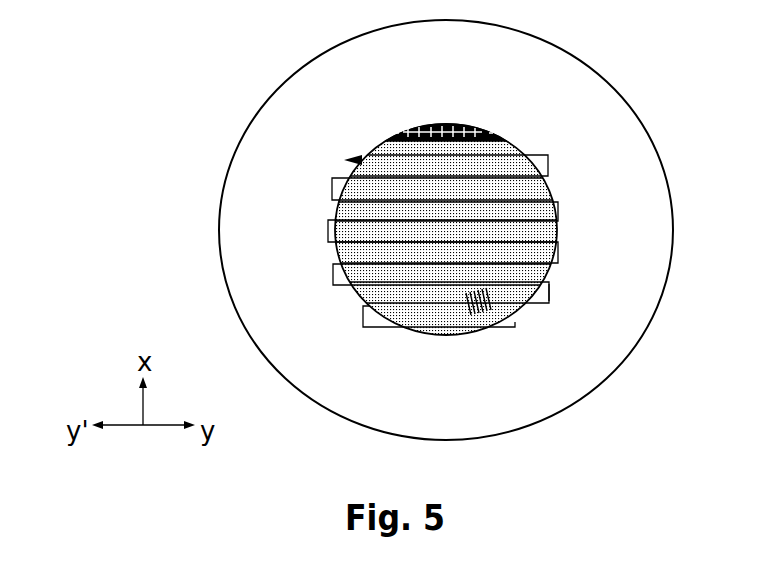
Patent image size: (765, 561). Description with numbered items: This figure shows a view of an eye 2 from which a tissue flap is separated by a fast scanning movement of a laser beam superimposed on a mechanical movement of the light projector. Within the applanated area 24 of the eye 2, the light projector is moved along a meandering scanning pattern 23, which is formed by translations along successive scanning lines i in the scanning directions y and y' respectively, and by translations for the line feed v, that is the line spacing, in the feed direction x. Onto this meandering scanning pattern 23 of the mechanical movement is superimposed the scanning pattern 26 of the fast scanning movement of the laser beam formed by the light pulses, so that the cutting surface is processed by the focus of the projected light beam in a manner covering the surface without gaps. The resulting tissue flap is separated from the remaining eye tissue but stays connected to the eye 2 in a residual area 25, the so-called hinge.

The eye 2 is at (597, 370).
The meandering scanning pattern 23 is at (552, 162).
The applanated area 24 is at (505, 145).
The residual area 25 is at (440, 127).
The scanning pattern of the fast scanning movement 26 is at (465, 311).
The scanning line i is at (535, 303).
The line feed v is at (550, 289).